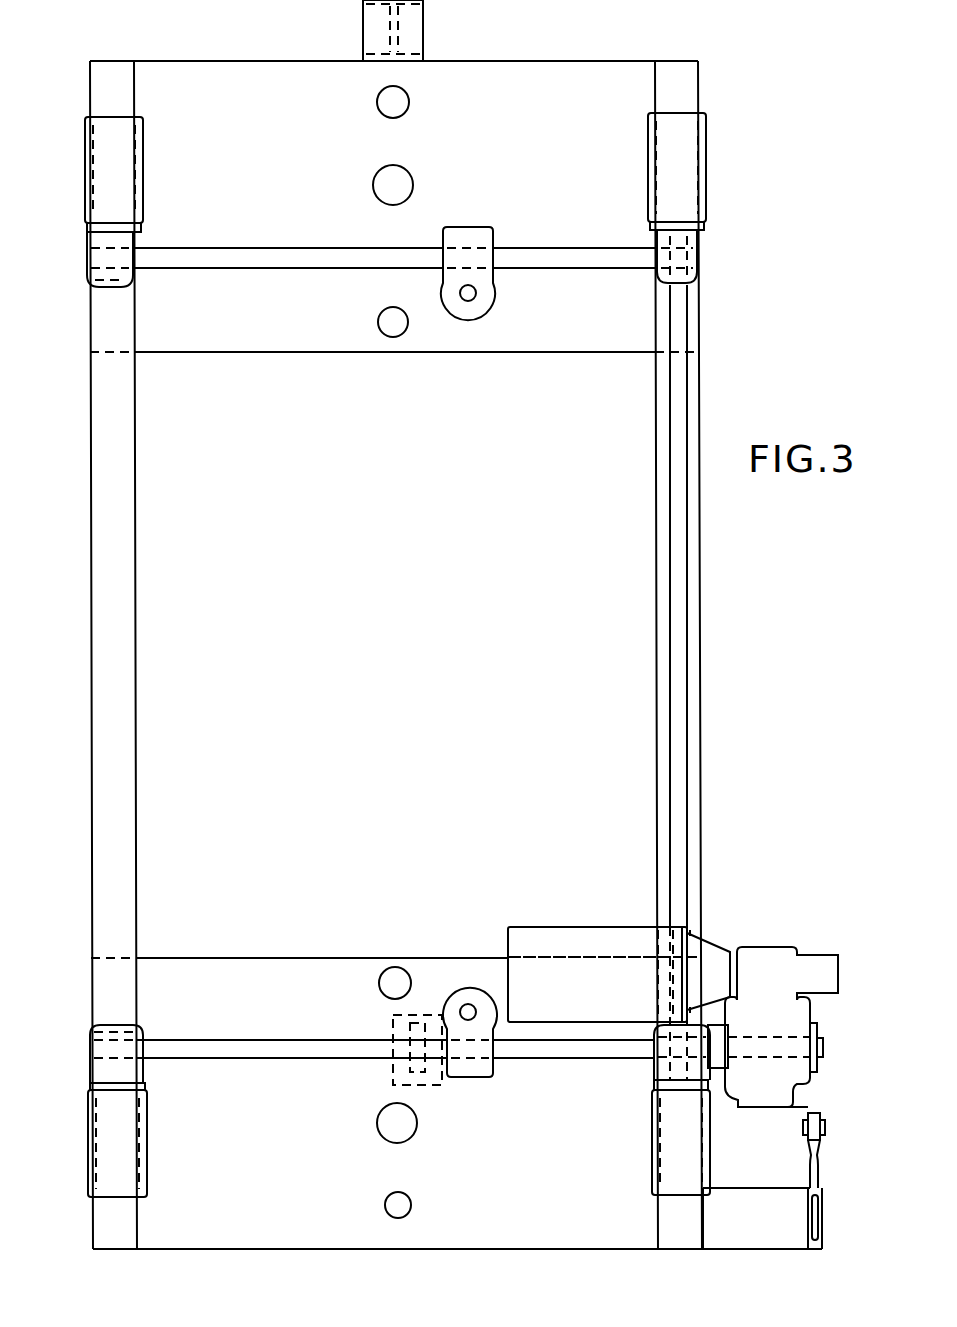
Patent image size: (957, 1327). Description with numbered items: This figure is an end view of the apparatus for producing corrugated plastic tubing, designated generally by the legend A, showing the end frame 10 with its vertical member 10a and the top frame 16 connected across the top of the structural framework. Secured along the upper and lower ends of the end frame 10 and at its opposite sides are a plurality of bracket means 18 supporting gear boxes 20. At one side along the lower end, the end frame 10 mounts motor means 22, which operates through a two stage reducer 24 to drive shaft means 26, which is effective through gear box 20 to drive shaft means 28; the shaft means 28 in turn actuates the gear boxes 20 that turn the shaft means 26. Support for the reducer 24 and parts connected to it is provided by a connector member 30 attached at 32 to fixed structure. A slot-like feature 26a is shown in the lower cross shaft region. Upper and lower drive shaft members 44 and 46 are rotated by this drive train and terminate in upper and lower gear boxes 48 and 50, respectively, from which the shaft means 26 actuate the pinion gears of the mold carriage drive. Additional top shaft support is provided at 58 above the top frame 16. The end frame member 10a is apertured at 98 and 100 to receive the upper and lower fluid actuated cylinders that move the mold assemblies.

The end frame 10 is at (456, 634).
The vertical member 10a is at (144, 655).
The top frame 16 is at (456, 634).
The bracket means 18 is at (401, 655).
The gear box 20 is at (395, 660).
The motor means 22 is at (619, 953).
The two stage reducer 24 is at (781, 1027).
The shaft means 26 is at (505, 660).
The cross bar slot 26a is at (385, 1057).
The shaft means 28 is at (700, 655).
The connector member 30 is at (834, 1150).
The attachment point 32 is at (762, 1239).
The upper drive shaft member 44 is at (500, 302).
The lower drive shaft member 46 is at (457, 991).
The upper gear box 48 is at (479, 257).
The lower gear box 50 is at (474, 1049).
The top shaft support 58 is at (419, 30).
The aperture 98 is at (414, 211).
The aperture 100 is at (414, 1092).
The corrugating apparatus A is at (738, 110).